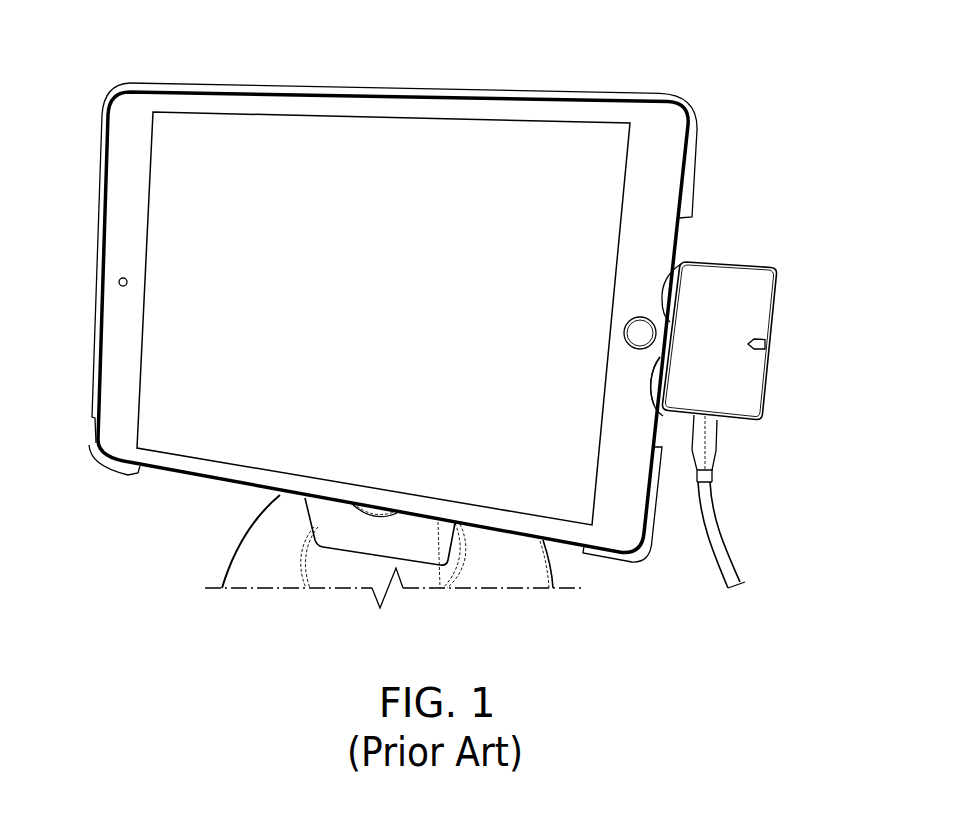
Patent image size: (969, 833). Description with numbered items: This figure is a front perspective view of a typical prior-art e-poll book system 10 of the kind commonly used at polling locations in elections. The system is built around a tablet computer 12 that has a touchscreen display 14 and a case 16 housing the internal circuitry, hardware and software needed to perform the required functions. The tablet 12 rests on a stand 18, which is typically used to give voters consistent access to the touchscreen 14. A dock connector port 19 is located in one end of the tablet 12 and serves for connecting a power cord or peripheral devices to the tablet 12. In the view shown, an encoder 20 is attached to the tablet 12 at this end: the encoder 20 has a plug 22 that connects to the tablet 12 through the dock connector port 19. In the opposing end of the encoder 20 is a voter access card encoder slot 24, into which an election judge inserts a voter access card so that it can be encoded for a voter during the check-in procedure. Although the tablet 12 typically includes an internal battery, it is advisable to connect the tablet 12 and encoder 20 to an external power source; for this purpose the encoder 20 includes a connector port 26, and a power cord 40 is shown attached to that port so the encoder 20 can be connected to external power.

The e-poll book system 10 is at (742, 90).
The tablet computer 12 is at (124, 66).
The touchscreen display 14 is at (248, 434).
The case 16 is at (637, 553).
The stand 18 is at (280, 555).
The dock connector port 19 is at (666, 287).
The encoder 20 is at (789, 265).
The plug 22 is at (661, 412).
The voter access card encoder slot 24 is at (770, 344).
The connector port 26 is at (723, 418).
The power cord 40 is at (710, 453).